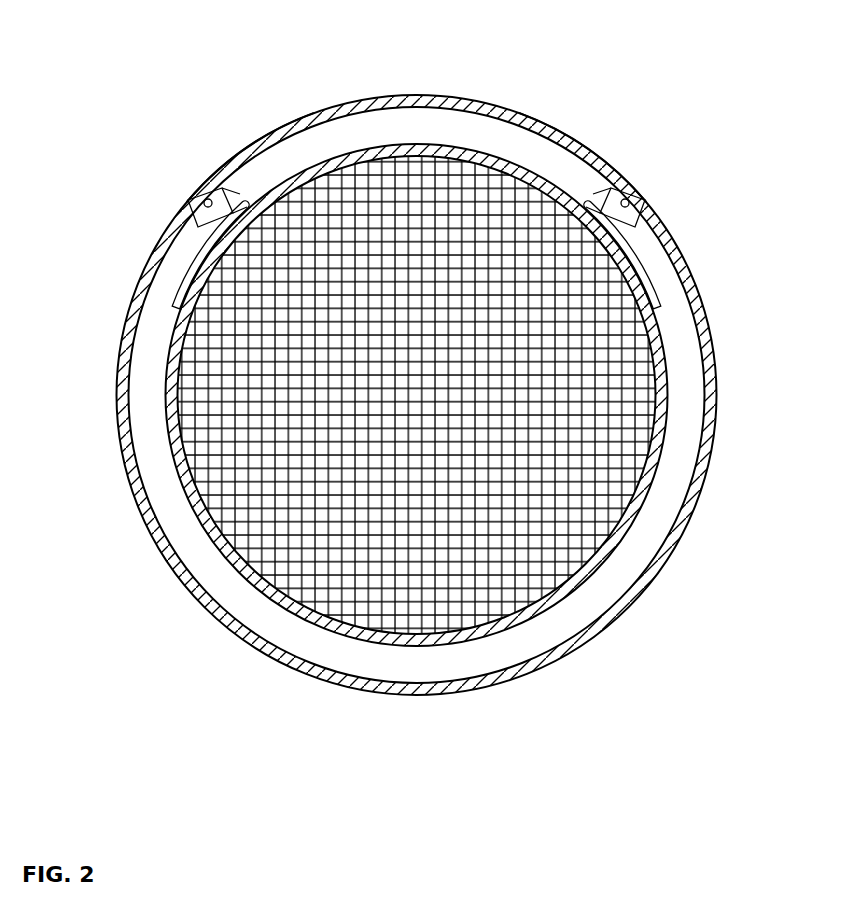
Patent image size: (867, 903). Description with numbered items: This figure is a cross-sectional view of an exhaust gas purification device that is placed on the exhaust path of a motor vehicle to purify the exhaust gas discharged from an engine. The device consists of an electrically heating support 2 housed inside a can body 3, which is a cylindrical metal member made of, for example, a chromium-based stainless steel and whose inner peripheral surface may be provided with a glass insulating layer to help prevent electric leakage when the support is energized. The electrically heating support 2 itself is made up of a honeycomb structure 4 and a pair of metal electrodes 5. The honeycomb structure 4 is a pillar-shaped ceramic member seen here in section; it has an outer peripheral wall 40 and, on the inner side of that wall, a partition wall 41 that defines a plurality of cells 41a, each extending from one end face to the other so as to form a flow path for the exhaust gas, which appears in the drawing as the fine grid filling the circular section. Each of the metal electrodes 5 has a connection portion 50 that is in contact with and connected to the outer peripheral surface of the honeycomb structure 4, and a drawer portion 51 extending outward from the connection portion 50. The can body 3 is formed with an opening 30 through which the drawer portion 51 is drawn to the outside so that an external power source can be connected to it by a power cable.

The electrically heating support 2 is at (474, 395).
The can body 3 is at (428, 97).
The opening 30 is at (262, 146).
The honeycomb structure 4 is at (665, 433).
The outer peripheral wall 40 is at (467, 395).
The partition wall 41 is at (600, 545).
The cells 41a is at (592, 545).
The metal electrodes 5 is at (421, 213).
The connection portion 50 is at (197, 257).
The drawer portion 51 is at (197, 183).